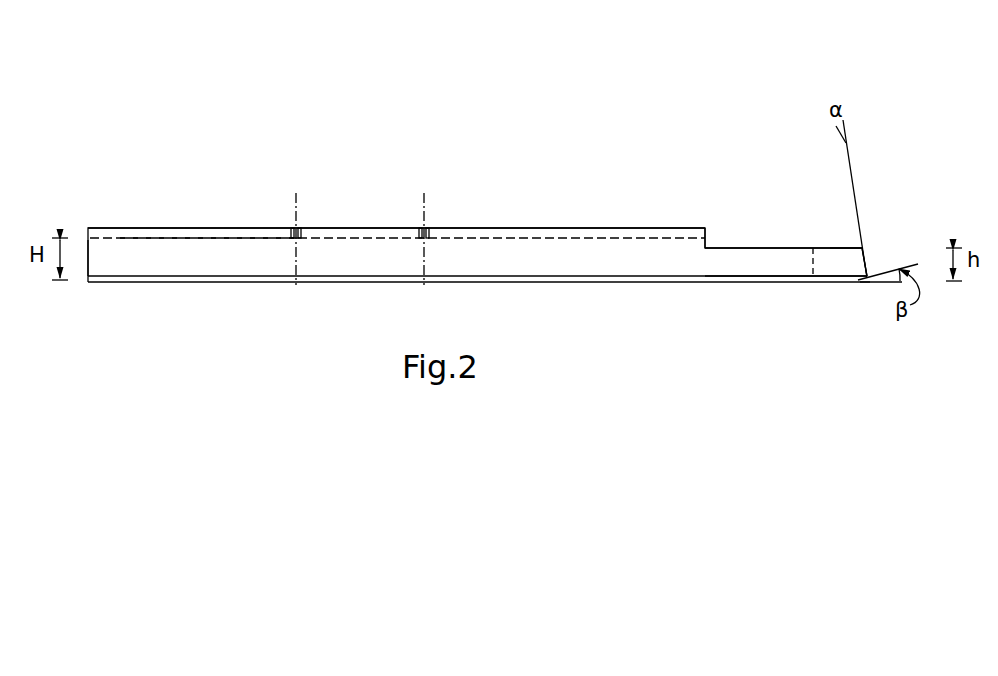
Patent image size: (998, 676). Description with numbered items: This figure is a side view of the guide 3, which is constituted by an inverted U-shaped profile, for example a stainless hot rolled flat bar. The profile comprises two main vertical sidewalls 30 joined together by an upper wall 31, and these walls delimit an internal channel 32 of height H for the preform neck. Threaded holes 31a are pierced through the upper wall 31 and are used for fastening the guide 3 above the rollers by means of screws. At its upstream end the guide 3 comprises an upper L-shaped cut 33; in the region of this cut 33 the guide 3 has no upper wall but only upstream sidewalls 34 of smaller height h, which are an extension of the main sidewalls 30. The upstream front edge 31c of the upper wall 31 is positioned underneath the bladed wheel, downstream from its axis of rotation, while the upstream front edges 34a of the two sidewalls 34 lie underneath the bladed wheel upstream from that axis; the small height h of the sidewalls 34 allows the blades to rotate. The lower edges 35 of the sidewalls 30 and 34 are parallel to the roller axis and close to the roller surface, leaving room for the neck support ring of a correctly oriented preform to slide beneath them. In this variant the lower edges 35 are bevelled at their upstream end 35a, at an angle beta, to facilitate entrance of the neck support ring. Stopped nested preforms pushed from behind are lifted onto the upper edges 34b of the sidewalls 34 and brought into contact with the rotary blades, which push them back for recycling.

The guide 3 is at (477, 315).
The main vertical sidewalls 30 is at (165, 263).
The upper wall 31 is at (396, 187).
The threaded holes 31a is at (298, 229).
The upstream front edge of the upper wall 31c is at (709, 236).
The internal channel 32 is at (135, 257).
The upper L-shaped cut 33 is at (845, 178).
The upstream sidewalls 34 is at (755, 263).
The upstream front edges of the upstream sidewalls 34a is at (925, 188).
The upper edges of the upstream sidewalls 34b is at (811, 218).
The lower edges 35 is at (495, 333).
The bevelled upstream end 35a is at (823, 318).